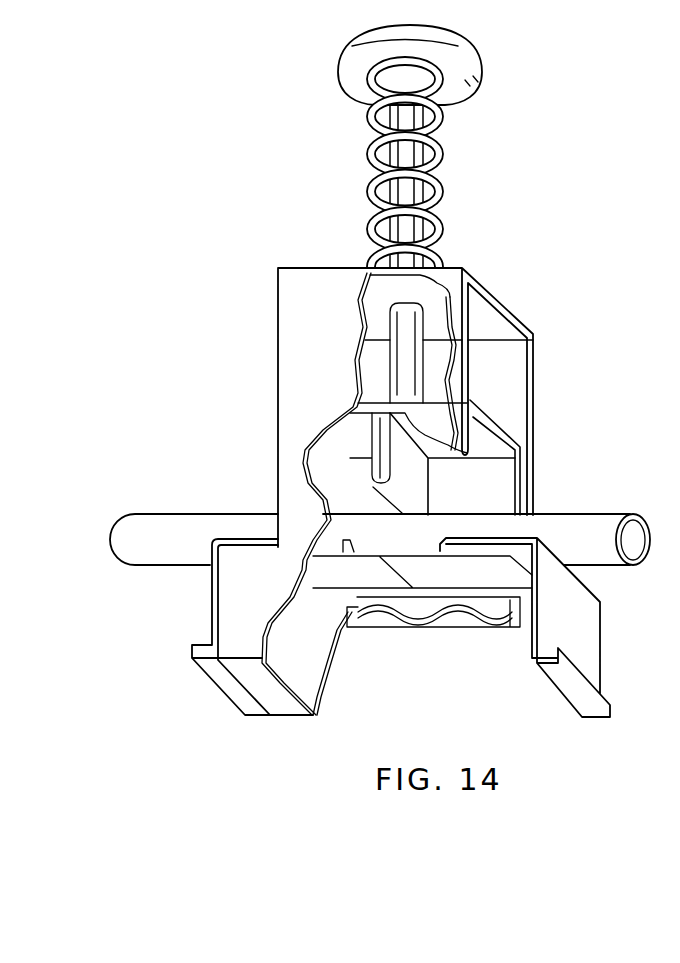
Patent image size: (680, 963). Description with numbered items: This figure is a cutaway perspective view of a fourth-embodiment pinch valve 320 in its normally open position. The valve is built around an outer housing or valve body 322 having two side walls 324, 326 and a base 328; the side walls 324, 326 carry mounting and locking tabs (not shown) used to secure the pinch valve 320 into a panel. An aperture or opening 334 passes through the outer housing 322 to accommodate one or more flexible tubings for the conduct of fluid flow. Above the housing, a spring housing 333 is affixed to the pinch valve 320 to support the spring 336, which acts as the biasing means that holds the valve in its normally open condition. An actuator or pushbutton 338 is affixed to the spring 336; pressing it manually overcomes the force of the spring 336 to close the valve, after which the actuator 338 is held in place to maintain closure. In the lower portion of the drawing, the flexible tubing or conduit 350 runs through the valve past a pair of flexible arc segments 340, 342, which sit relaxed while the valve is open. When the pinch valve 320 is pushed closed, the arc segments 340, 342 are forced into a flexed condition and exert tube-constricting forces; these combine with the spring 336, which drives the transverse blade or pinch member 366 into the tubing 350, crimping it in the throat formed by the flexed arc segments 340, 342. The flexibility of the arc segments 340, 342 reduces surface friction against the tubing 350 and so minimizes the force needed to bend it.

The pinch valve 320 is at (236, 165).
The outer housing 322 is at (298, 327).
The side wall 324 is at (490, 440).
The side wall 326 is at (303, 398).
The base 328 is at (300, 262).
The spring housing 333 is at (370, 92).
The aperture 334 is at (495, 473).
The spring 336 is at (368, 186).
The pushbutton 338 is at (463, 43).
The arc segment 340 is at (320, 570).
The arc segment 342 is at (472, 580).
The flexible tubing 350 is at (613, 557).
The pinch member 366 is at (410, 482).